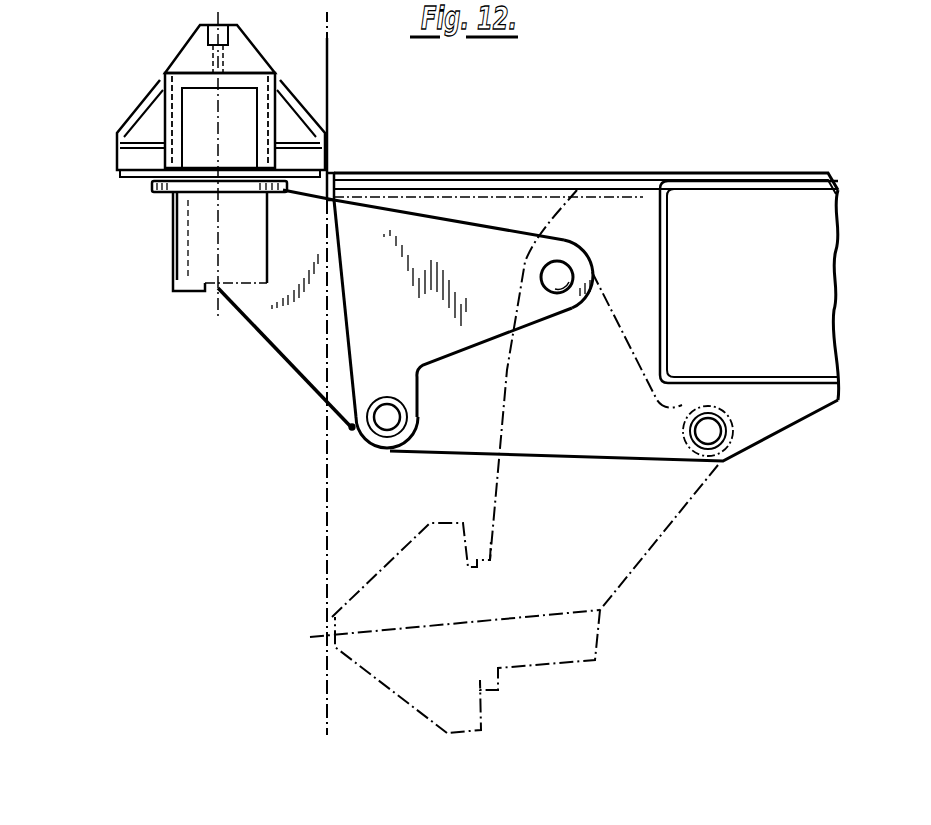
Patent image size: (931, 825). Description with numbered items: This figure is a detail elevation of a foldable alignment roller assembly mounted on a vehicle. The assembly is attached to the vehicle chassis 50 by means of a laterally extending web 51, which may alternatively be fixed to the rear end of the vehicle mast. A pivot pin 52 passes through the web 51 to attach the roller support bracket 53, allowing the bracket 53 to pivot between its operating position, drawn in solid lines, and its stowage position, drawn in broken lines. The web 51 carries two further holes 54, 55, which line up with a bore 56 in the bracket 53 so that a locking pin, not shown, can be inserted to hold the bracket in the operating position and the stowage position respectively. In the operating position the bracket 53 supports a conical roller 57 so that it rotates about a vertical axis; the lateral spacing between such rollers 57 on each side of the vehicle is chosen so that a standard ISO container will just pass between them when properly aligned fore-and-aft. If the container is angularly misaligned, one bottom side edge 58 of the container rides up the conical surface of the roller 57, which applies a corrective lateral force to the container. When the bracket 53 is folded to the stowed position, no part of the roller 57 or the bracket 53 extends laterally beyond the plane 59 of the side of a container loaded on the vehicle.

The vehicle chassis 50 is at (672, 351).
The laterally extending web 51 is at (618, 247).
The pivot pin 52 is at (559, 261).
The roller support bracket 53 is at (283, 323).
The hole 54 is at (385, 422).
The hole 55 is at (721, 433).
The bore 56 is at (349, 428).
The conical roller 57 is at (118, 128).
The bottom side edge 58 is at (338, 166).
The plane 59 is at (322, 598).